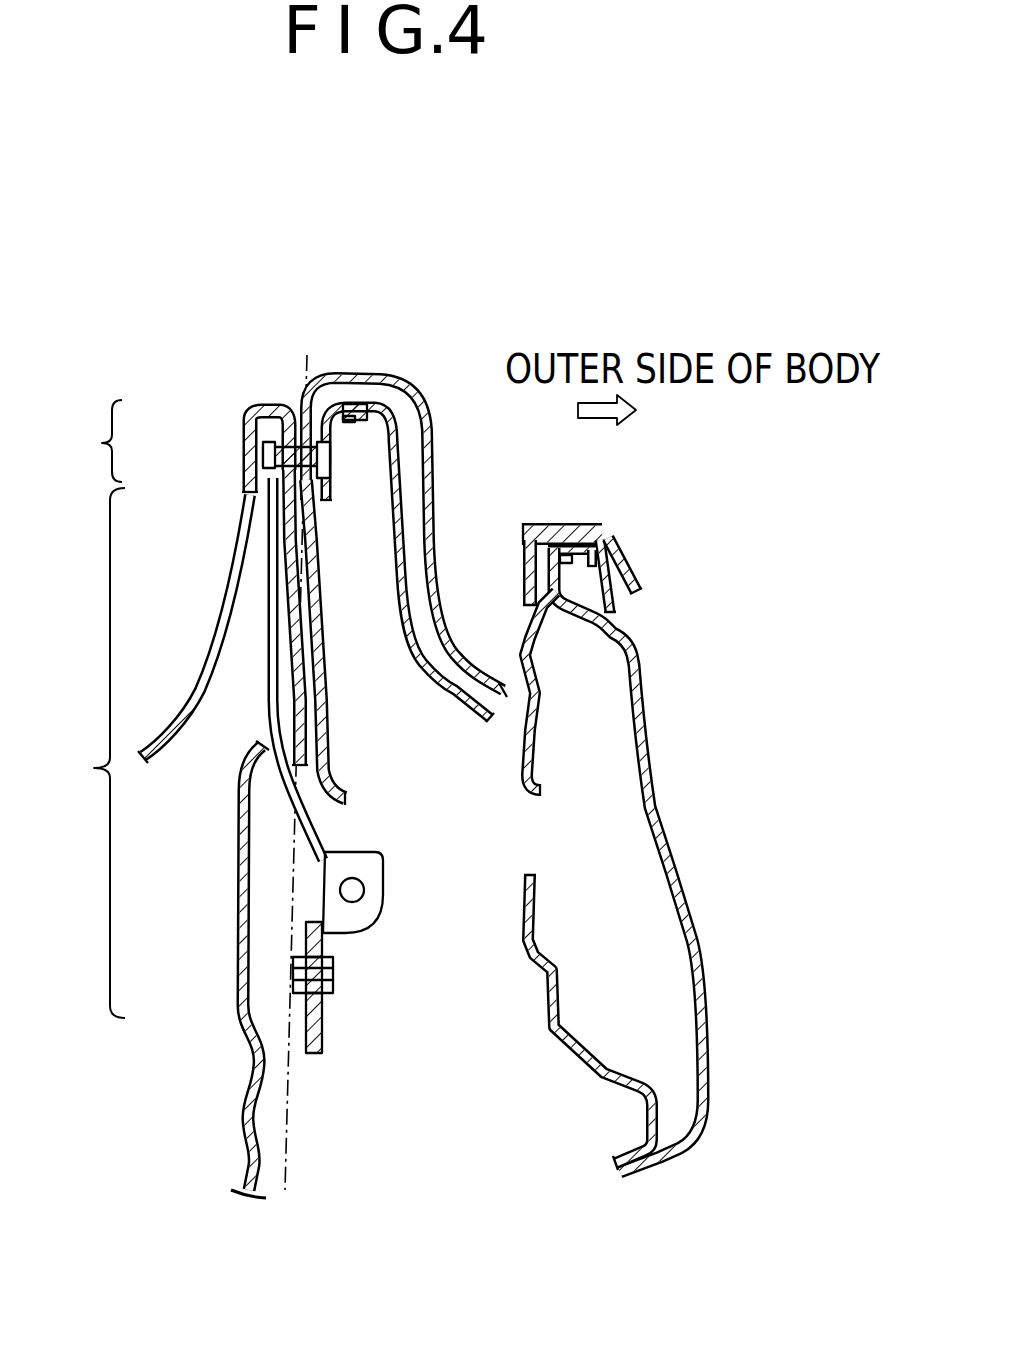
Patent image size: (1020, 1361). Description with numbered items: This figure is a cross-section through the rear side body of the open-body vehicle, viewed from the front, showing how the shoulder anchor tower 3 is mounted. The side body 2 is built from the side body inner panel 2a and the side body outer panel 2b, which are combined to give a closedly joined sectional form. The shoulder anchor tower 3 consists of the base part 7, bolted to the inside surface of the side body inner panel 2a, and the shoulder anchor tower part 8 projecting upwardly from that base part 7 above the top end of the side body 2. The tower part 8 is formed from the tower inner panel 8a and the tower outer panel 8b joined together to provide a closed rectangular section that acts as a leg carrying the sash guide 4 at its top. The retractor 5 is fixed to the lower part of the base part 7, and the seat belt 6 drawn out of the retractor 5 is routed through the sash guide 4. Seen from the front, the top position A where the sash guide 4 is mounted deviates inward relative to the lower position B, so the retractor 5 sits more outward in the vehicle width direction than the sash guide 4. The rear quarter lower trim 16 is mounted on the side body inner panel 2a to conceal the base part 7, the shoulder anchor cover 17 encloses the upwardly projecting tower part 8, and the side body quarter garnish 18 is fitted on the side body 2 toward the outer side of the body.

The side body 2 is at (660, 716).
The side body inner panel 2a is at (565, 1062).
The side body outer panel 2b is at (704, 1024).
The shoulder anchor tower 3 is at (410, 484).
The sash guide 4 is at (246, 425).
The retractor 5 is at (370, 914).
The seat belt 6 is at (273, 682).
The base part 7 is at (324, 1019).
The shoulder anchor tower part 8 is at (395, 405).
The tower inner panel 8a is at (307, 563).
The tower outer panel 8b is at (397, 573).
The rear quarter lower trim 16 is at (240, 1010).
The shoulder anchor cover 17 is at (366, 377).
The side body quarter garnish 18 is at (575, 522).
The position A is at (92, 441).
The lower position B is at (87, 753).